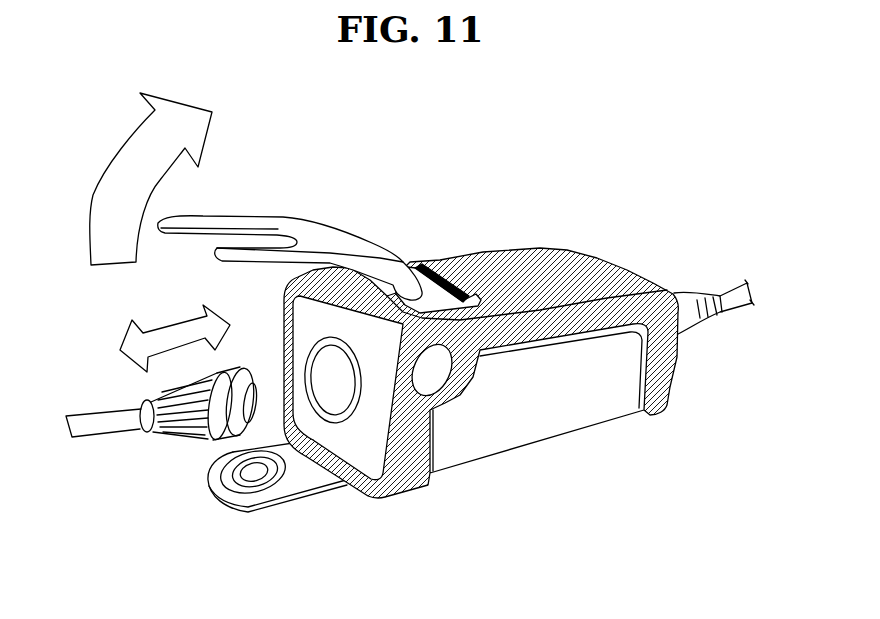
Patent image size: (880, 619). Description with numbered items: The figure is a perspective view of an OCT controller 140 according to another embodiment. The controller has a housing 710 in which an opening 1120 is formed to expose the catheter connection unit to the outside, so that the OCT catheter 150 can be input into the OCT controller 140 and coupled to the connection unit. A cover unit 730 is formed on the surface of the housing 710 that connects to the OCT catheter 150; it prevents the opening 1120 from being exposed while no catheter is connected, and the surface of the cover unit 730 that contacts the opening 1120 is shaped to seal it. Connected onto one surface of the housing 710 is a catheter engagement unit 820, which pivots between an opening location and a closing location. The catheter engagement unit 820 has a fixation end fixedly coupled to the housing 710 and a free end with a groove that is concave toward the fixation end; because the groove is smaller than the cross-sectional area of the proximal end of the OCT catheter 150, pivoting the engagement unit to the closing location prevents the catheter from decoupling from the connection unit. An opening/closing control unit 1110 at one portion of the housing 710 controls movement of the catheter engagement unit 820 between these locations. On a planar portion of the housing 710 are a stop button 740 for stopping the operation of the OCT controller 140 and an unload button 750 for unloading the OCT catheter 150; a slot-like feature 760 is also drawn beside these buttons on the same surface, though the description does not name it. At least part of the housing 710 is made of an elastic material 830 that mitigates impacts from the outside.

The OCT controller 140 is at (519, 364).
The OCT catheter 150 is at (137, 437).
The housing 710 is at (535, 415).
The cover unit 730 is at (263, 490).
The stop button 740 is at (436, 246).
The unload button 750 is at (436, 246).
The slot 760 is at (470, 287).
The catheter engagement unit 820 is at (307, 233).
The elastic material 830 is at (605, 272).
The opening/closing control unit 1110 is at (435, 374).
The opening 1120 is at (333, 402).